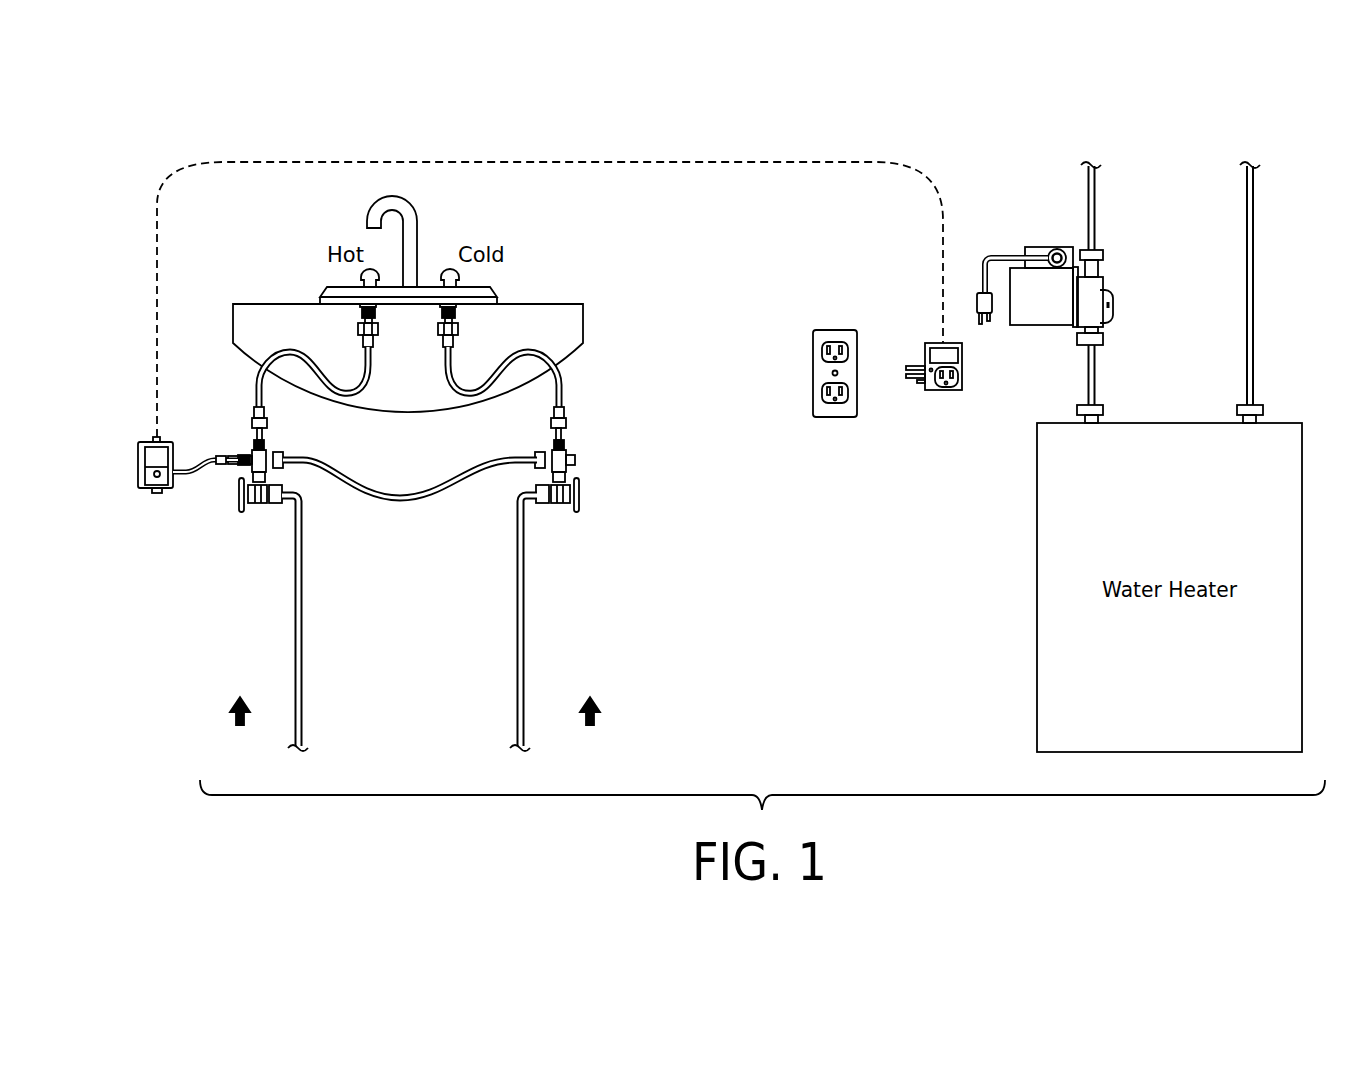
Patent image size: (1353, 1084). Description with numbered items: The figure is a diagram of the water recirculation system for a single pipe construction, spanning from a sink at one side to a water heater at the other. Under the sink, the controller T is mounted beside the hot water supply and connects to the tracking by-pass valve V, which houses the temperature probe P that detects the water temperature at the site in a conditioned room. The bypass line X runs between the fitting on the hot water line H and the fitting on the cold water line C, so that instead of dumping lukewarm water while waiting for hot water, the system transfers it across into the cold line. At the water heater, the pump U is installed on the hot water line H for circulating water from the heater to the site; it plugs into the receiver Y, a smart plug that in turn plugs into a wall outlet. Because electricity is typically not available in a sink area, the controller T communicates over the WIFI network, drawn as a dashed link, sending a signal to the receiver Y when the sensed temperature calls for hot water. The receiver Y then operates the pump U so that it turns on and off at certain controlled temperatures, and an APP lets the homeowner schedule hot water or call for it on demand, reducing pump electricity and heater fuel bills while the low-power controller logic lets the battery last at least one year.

The WIFI network WIFI is at (567, 162).
The temperature probe P is at (230, 440).
The bypass valve V is at (284, 439).
The controller T is at (122, 491).
The bypass line X is at (452, 515).
The hot water line H is at (282, 659).
The cold water line C is at (536, 659).
The pump U is at (1012, 244).
The receiver Y is at (908, 396).